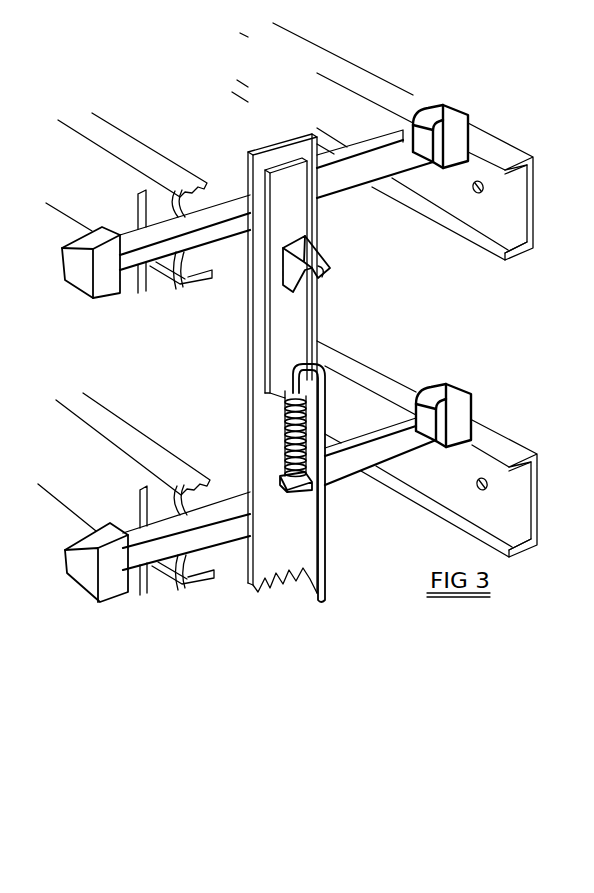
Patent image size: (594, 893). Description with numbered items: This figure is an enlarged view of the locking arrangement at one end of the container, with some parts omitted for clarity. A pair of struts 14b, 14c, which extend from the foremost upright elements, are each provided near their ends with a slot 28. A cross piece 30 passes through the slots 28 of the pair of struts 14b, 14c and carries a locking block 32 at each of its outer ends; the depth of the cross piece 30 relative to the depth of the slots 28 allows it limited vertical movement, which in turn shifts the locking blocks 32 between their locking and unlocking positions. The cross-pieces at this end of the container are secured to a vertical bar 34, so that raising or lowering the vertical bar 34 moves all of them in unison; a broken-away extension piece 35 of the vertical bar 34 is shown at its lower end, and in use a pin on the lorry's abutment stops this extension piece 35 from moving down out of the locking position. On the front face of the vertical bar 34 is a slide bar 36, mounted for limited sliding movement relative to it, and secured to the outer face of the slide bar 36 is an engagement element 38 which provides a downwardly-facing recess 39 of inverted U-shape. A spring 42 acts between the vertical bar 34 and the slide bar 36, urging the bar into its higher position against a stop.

The strut 14b is at (133, 149).
The strut 14c is at (358, 78).
The slot 28 is at (137, 204).
The cross piece 30 is at (216, 224).
The locking block 32 is at (88, 290).
The vertical bar 34 is at (319, 308).
The extension piece 35 is at (322, 532).
The slide bar 36 is at (292, 332).
The engagement element 38 is at (307, 247).
The recess 39 is at (320, 268).
The spring 42 is at (283, 418).